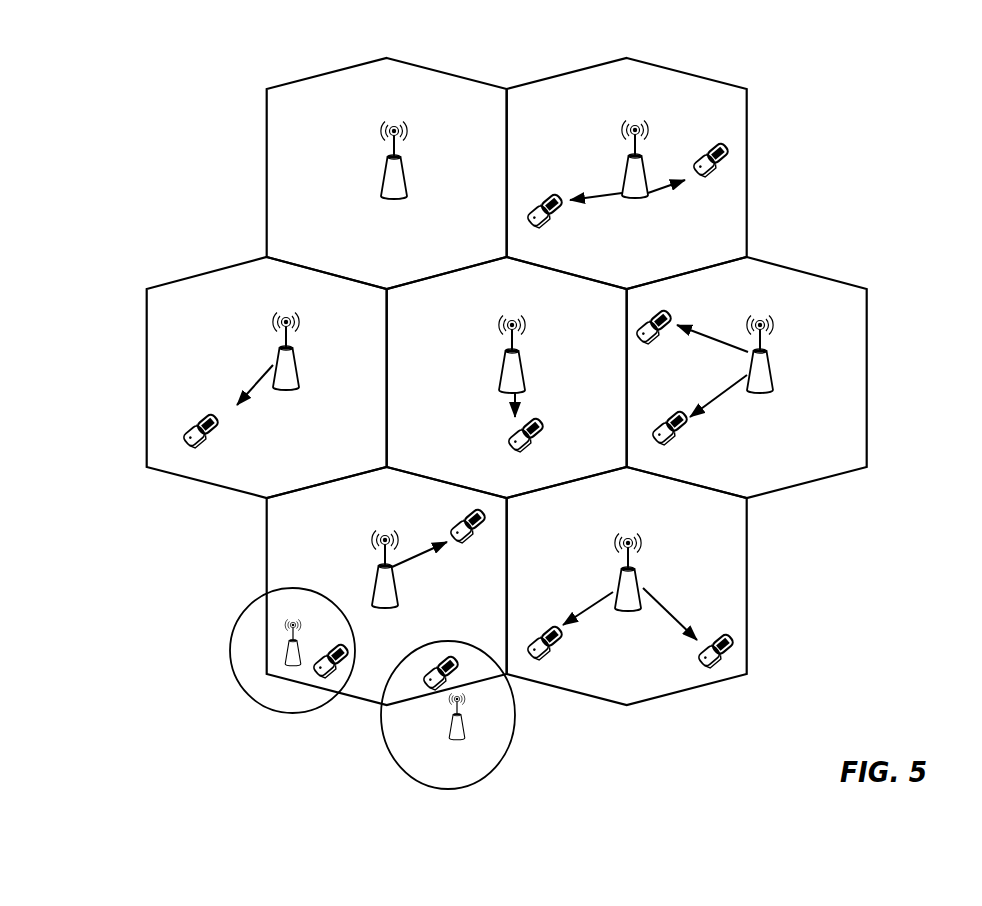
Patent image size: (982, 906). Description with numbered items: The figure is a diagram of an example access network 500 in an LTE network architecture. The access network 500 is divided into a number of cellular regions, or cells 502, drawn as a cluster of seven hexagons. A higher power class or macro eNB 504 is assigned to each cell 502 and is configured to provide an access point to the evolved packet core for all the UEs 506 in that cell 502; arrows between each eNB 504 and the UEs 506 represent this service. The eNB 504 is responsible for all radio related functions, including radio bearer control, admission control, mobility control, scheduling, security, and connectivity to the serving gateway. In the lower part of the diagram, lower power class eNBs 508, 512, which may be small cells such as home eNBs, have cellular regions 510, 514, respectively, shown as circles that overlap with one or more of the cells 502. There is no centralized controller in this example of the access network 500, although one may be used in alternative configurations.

The access network 500 is at (868, 90).
The cell 502 is at (266, 130).
The macro eNB 504 is at (385, 119).
The UE 506 is at (731, 143).
The lower power class eNB 508 is at (290, 615).
The cellular region 510 is at (243, 655).
The lower power class eNB 512 is at (467, 743).
The cellular region 514 is at (415, 728).